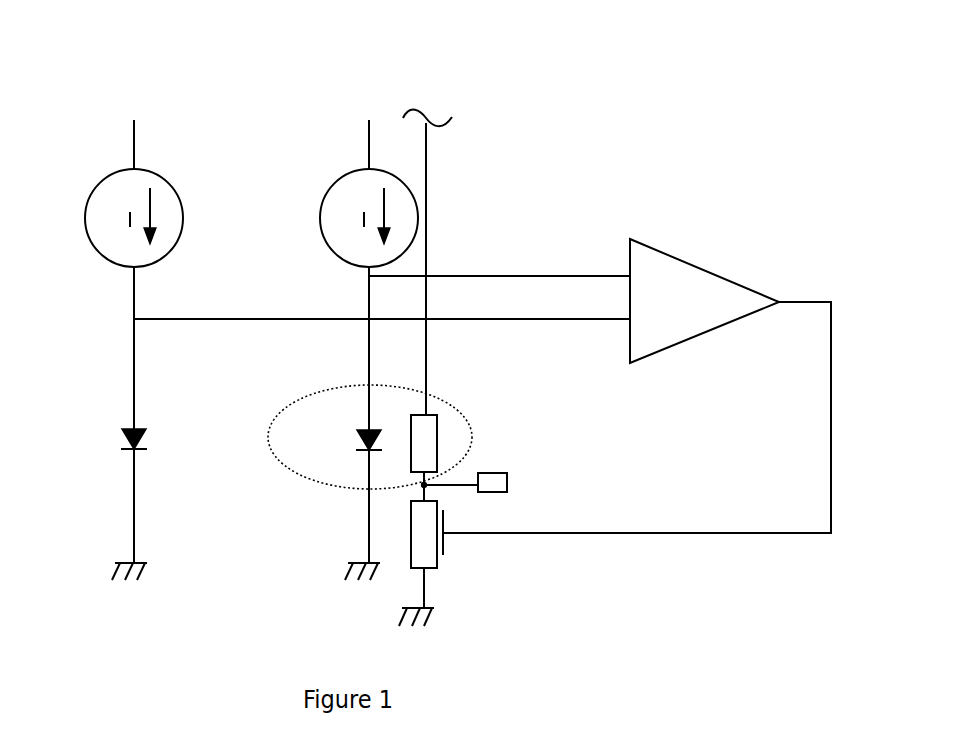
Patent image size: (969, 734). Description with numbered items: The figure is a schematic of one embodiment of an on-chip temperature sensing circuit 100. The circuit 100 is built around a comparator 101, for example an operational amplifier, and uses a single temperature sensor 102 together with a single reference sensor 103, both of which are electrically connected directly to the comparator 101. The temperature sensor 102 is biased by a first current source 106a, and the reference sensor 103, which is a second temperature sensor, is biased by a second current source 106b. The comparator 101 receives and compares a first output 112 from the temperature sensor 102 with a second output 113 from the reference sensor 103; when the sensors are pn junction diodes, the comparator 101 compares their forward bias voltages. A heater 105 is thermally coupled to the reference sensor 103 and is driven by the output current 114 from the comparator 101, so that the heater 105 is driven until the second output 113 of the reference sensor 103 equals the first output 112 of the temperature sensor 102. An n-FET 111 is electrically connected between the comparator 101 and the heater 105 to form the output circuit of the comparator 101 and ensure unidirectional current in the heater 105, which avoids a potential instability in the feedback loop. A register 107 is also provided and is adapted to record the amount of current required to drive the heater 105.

The temperature sensing circuit 100 is at (640, 87).
The comparator 101 is at (704, 268).
The temperature sensor 102 is at (130, 428).
The reference sensor 103 is at (362, 430).
The heater 105 is at (437, 423).
The first current source 106a is at (101, 180).
The second current source 106b is at (335, 178).
The register 107 is at (507, 483).
The n-FET 111 is at (448, 555).
The first output 112 is at (613, 317).
The second output 113 is at (613, 272).
The output current 114 is at (805, 300).